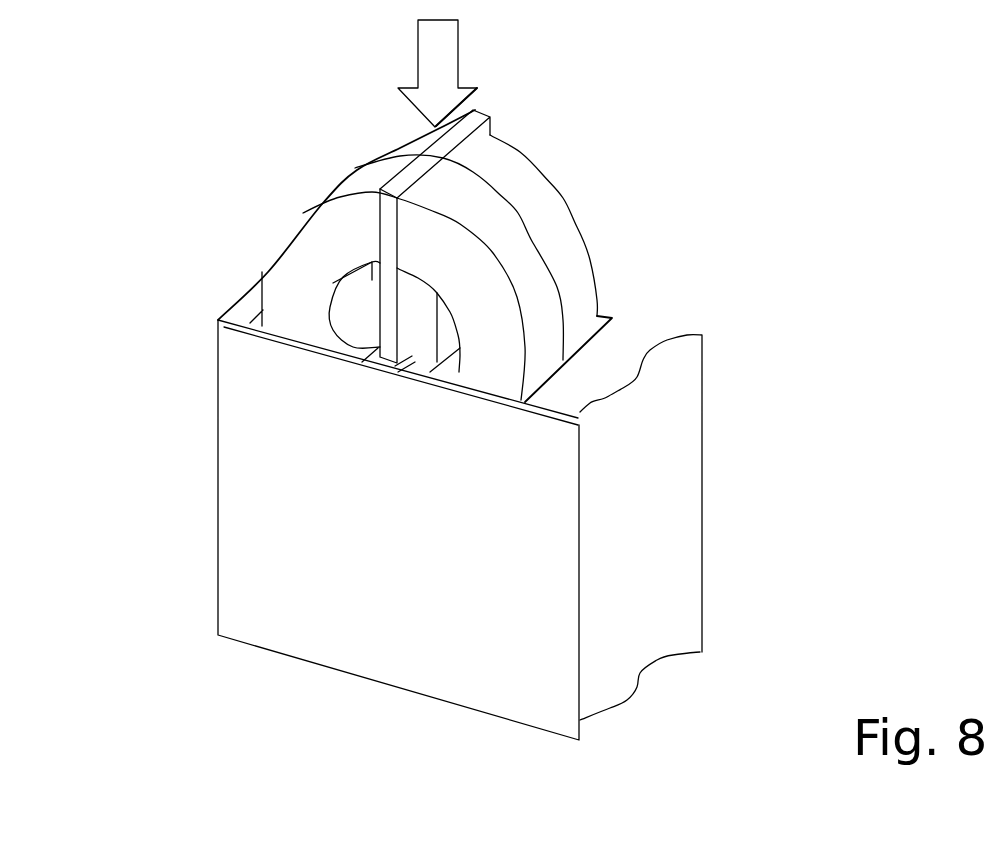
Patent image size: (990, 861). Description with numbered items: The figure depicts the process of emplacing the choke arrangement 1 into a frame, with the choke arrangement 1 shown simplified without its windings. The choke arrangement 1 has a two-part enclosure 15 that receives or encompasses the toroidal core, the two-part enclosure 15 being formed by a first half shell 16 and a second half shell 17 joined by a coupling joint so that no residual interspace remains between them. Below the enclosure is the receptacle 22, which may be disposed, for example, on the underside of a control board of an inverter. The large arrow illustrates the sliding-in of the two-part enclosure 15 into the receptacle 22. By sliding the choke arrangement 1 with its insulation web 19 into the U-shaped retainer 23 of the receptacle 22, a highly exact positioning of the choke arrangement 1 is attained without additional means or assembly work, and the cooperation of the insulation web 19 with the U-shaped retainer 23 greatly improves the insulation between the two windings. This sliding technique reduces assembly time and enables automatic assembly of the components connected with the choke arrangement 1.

The choke arrangement 1 is at (540, 108).
The two-part enclosure 15 is at (390, 123).
The first half shell 16 is at (500, 230).
The second half shell 17 is at (567, 243).
The insulation web 19 is at (372, 287).
The receptacle 22 is at (640, 333).
The U-shaped retainer 23 is at (388, 366).